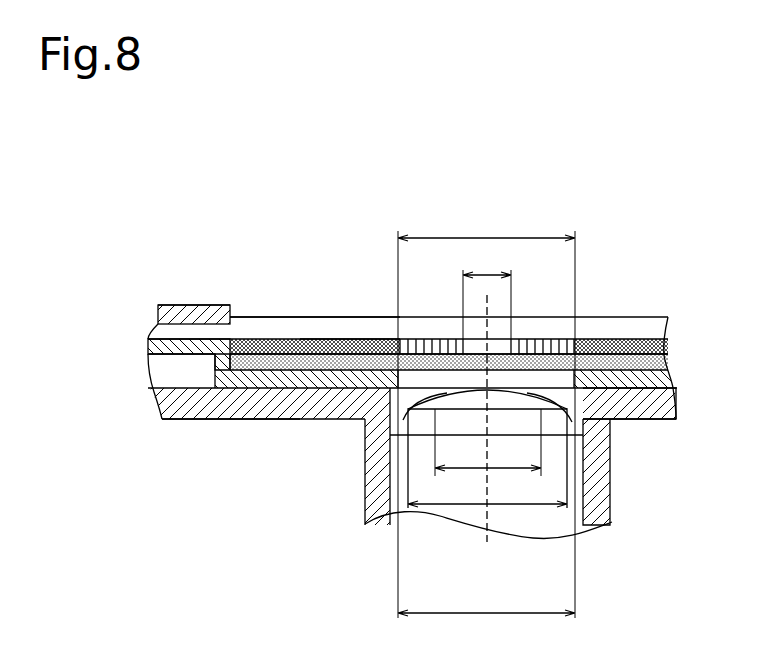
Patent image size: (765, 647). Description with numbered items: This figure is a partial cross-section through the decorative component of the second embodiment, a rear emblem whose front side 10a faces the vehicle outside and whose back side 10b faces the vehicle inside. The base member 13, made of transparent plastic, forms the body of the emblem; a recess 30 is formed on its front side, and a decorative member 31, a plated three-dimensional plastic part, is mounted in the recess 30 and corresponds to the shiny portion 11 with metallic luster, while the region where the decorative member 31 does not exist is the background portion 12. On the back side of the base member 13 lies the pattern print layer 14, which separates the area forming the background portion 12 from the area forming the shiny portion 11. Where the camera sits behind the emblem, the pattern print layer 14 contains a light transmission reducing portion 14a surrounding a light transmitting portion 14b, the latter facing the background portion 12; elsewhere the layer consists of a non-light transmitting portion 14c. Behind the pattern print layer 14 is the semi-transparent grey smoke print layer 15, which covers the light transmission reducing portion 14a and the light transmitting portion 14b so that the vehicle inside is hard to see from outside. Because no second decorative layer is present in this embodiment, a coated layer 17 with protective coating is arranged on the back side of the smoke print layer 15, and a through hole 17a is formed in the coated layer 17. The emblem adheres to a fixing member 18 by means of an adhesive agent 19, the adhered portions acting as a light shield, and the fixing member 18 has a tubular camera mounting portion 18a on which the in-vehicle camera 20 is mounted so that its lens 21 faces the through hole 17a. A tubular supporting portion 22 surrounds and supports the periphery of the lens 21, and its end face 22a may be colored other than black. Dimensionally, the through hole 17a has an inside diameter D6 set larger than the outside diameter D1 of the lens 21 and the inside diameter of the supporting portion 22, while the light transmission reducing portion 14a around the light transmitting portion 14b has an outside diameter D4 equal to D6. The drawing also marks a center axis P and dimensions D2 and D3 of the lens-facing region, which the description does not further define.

The front side 10a is at (282, 317).
The back side 10b is at (215, 421).
The shiny portion 11 is at (209, 289).
The background portion 12 is at (326, 289).
The base member 13 is at (665, 317).
The pattern print layer 14 is at (433, 316).
The light transmission reducing portion 14a is at (528, 338).
The light transmitting portion 14b is at (472, 338).
The non-light transmitting portion 14c is at (353, 338).
The smoke print layer 15 is at (658, 349).
The coated layer 17 is at (150, 340).
The through hole 17a is at (590, 353).
The fixing member 18 is at (255, 421).
The camera mounting portion 18a is at (365, 474).
The adhesive agent 19 is at (676, 420).
The in-vehicle camera 20 is at (592, 500).
The lens 21 is at (577, 421).
The supporting portion 22 is at (482, 449).
The end face 22a is at (403, 420).
The recess 30 is at (225, 304).
The decorative member 31 is at (172, 305).
The center axis P is at (487, 434).
The outside diameter of the lens D1 is at (488, 442).
The dimension D2 is at (487, 292).
The dimension D3 is at (487, 491).
The outside diameter of the light transmission reducing portion D4 is at (486, 413).
The inside diameter of the through hole D6 is at (486, 601).